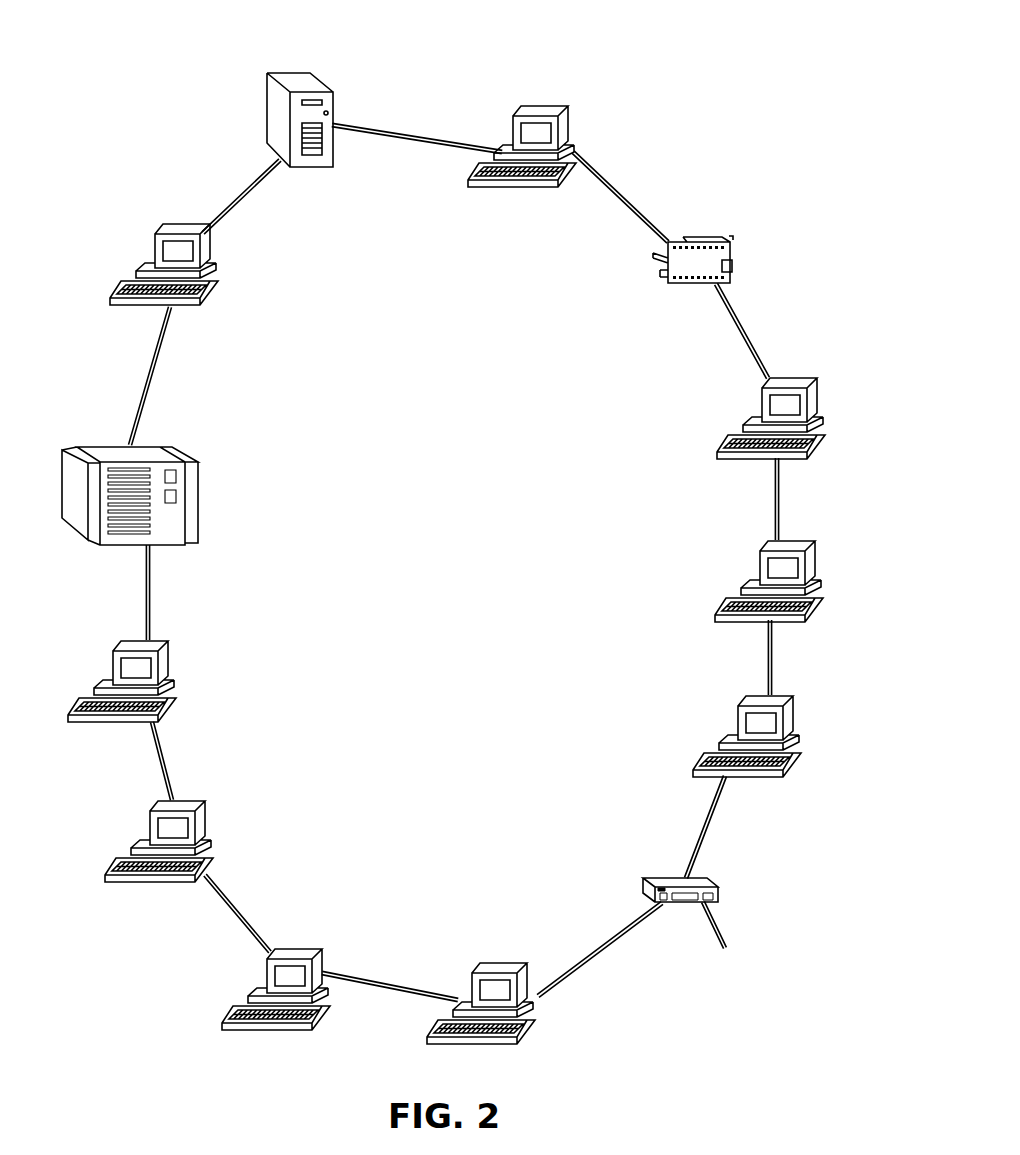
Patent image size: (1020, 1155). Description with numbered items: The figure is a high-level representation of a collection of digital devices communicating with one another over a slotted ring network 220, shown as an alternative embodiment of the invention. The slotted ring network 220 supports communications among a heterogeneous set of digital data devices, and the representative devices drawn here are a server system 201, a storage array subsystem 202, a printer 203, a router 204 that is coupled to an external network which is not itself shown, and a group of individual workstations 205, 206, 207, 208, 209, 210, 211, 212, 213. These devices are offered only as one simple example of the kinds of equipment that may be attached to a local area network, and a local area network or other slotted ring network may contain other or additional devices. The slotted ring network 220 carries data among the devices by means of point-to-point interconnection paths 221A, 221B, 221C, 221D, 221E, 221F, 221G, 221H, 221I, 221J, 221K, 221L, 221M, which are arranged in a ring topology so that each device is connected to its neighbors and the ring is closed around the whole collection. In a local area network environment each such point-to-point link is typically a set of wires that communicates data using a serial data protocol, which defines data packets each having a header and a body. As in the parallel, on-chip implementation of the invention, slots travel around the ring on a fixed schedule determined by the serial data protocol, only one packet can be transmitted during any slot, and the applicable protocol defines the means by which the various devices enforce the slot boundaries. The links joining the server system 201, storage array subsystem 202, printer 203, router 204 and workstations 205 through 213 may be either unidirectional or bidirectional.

The slotted ring network 220 is at (672, 76).
The server system 201 is at (290, 75).
The storage array subsystem 202 is at (120, 445).
The printer 203 is at (714, 236).
The router 204 is at (668, 876).
The workstation 205 is at (160, 232).
The workstation 206 is at (118, 648).
The workstation 207 is at (158, 807).
The workstation 208 is at (264, 958).
The workstation 209 is at (475, 966).
The workstation 210 is at (745, 702).
The workstation 211 is at (762, 549).
The workstation 212 is at (760, 384).
The workstation 213 is at (516, 116).
The point-to-point interconnection path 221A is at (266, 185).
The point-to-point interconnection path 221B is at (160, 365).
The point-to-point interconnection path 221C is at (152, 596).
The point-to-point interconnection path 221D is at (178, 752).
The point-to-point interconnection path 221E is at (238, 888).
The point-to-point interconnection path 221F is at (361, 973).
The point-to-point interconnection path 221G is at (595, 940).
The point-to-point interconnection path 221H is at (710, 800).
The point-to-point interconnection path 221I is at (762, 646).
The point-to-point interconnection path 221J is at (770, 492).
The point-to-point interconnection path 221K is at (721, 309).
The point-to-point interconnection path 221L is at (615, 204).
The point-to-point interconnection path 221M is at (410, 150).